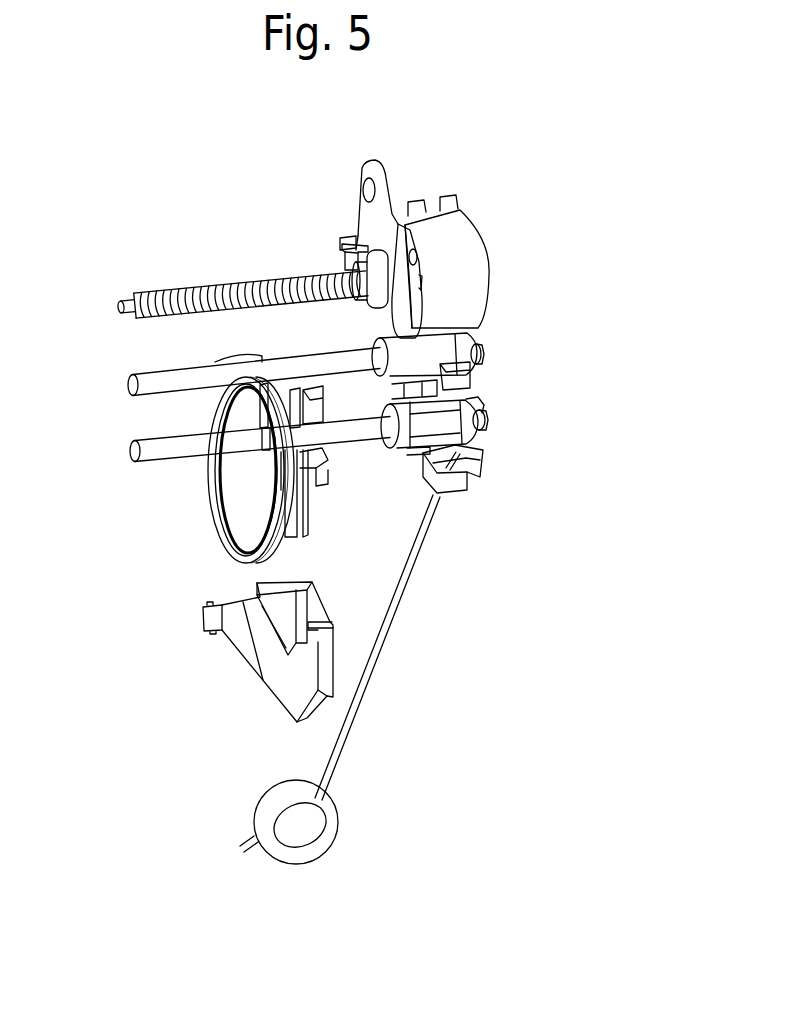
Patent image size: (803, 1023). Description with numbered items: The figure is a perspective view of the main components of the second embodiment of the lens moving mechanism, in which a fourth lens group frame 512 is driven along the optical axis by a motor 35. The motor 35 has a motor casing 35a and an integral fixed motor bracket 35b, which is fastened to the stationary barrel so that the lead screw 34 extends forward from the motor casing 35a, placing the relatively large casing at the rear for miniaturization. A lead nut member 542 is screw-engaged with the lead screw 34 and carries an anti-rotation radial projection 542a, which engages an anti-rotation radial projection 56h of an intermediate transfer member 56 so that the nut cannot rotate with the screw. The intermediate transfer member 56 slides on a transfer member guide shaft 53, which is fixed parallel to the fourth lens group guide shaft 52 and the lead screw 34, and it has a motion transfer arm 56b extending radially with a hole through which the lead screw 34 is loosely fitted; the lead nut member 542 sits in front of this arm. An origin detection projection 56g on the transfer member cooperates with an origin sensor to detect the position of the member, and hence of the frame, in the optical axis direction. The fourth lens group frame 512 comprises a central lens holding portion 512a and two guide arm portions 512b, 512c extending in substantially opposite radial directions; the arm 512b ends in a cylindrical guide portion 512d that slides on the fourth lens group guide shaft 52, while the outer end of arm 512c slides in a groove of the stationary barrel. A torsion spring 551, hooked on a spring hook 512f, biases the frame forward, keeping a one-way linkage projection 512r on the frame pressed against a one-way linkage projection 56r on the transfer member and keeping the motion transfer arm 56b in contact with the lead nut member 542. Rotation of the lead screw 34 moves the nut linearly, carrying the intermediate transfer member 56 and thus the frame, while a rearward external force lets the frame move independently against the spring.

The lead screw 34 is at (173, 290).
The motor 35 is at (483, 229).
The motor casing 35a is at (470, 250).
The fixed motor bracket 35b is at (385, 185).
The fourth lens group guide shaft 52 is at (132, 446).
The transfer member guide shaft 53 is at (128, 378).
The intermediate transfer member 56 is at (504, 398).
The motion transfer arm 56b is at (398, 312).
The origin detection projection 56g is at (480, 375).
The anti-rotation radial projection 56h is at (340, 247).
The one-way linkage projection 56r is at (468, 415).
The fourth lens group frame 512 is at (310, 538).
The central lens holding portion 512a is at (232, 550).
The guide arm portion 512b is at (318, 462).
The guide arm portion 512c is at (312, 598).
The cylindrical guide portion 512d is at (480, 404).
The spring hook 512f is at (455, 485).
The one-way linkage projection 512r is at (475, 392).
The lead nut member 542 is at (385, 298).
The anti-rotation radial projection 542a is at (343, 258).
The torsion spring 551 is at (340, 762).